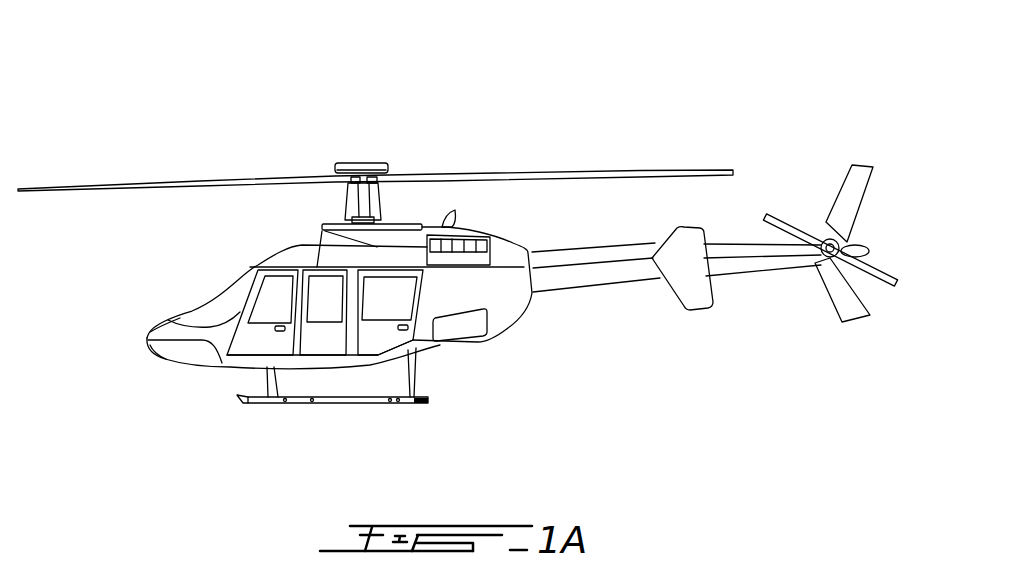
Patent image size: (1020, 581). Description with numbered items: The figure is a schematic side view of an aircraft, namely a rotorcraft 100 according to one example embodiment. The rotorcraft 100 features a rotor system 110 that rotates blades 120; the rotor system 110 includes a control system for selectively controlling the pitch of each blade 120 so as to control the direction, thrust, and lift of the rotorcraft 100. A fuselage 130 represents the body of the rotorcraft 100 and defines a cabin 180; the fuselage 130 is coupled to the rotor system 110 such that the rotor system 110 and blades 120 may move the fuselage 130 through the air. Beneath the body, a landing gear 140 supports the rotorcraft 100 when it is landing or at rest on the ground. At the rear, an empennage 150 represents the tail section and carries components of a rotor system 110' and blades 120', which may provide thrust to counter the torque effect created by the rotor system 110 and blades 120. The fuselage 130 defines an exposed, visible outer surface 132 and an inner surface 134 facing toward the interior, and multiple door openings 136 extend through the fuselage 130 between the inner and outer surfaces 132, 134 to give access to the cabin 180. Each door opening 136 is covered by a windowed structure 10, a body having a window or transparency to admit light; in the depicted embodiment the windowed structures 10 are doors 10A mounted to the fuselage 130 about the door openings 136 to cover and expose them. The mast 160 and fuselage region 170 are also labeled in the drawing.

The rotorcraft 100 is at (170, 80).
The rotor system 110 is at (361, 140).
The blades 120 is at (375, 149).
The rotor mast 160 is at (332, 206).
The fuselage 170 is at (496, 226).
The cabin 180 is at (488, 302).
The empennage 150 is at (606, 285).
The blades 120' is at (850, 243).
The tail rotor hub 110' is at (822, 294).
The fuselage 130 is at (168, 345).
The outer surface 132 is at (172, 328).
The inner surface 134 is at (163, 357).
The door openings 136 is at (237, 365).
The windowed structure 10 is at (240, 288).
The doors 10A is at (329, 365).
The landing gear 140 is at (302, 405).